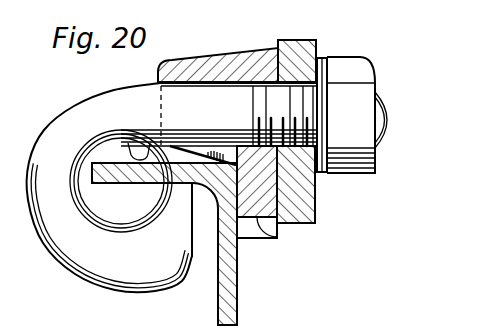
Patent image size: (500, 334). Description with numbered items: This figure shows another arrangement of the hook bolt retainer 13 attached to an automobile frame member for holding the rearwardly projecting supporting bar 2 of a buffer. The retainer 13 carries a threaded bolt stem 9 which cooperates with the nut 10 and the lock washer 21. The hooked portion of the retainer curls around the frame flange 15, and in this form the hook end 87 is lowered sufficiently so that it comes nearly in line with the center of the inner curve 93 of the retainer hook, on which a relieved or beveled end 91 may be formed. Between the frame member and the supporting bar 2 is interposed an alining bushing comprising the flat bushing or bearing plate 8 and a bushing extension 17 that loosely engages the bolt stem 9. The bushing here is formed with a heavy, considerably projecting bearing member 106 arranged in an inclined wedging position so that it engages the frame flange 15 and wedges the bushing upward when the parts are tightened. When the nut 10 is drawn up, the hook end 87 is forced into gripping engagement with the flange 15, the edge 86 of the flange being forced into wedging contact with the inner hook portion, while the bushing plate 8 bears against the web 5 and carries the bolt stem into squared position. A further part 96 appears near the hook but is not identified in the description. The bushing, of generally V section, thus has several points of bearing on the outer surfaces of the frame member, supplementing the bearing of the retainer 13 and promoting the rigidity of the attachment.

The supporting bar 2 is at (293, 40).
The web 5 is at (239, 285).
The bushing plate 8 is at (277, 239).
The bolt stem 9 is at (322, 47).
The nut 10 is at (357, 165).
The retainer 13 is at (52, 229).
The flange 15 is at (120, 184).
The bushing extension 17 is at (210, 53).
The lock washer 21 is at (320, 170).
The edge 86 is at (92, 148).
The hook end 87 is at (180, 186).
The beveled end 91 is at (196, 232).
The inner curve 93 is at (102, 221).
The spring hook 96 is at (148, 147).
The bearing member 106 is at (172, 148).